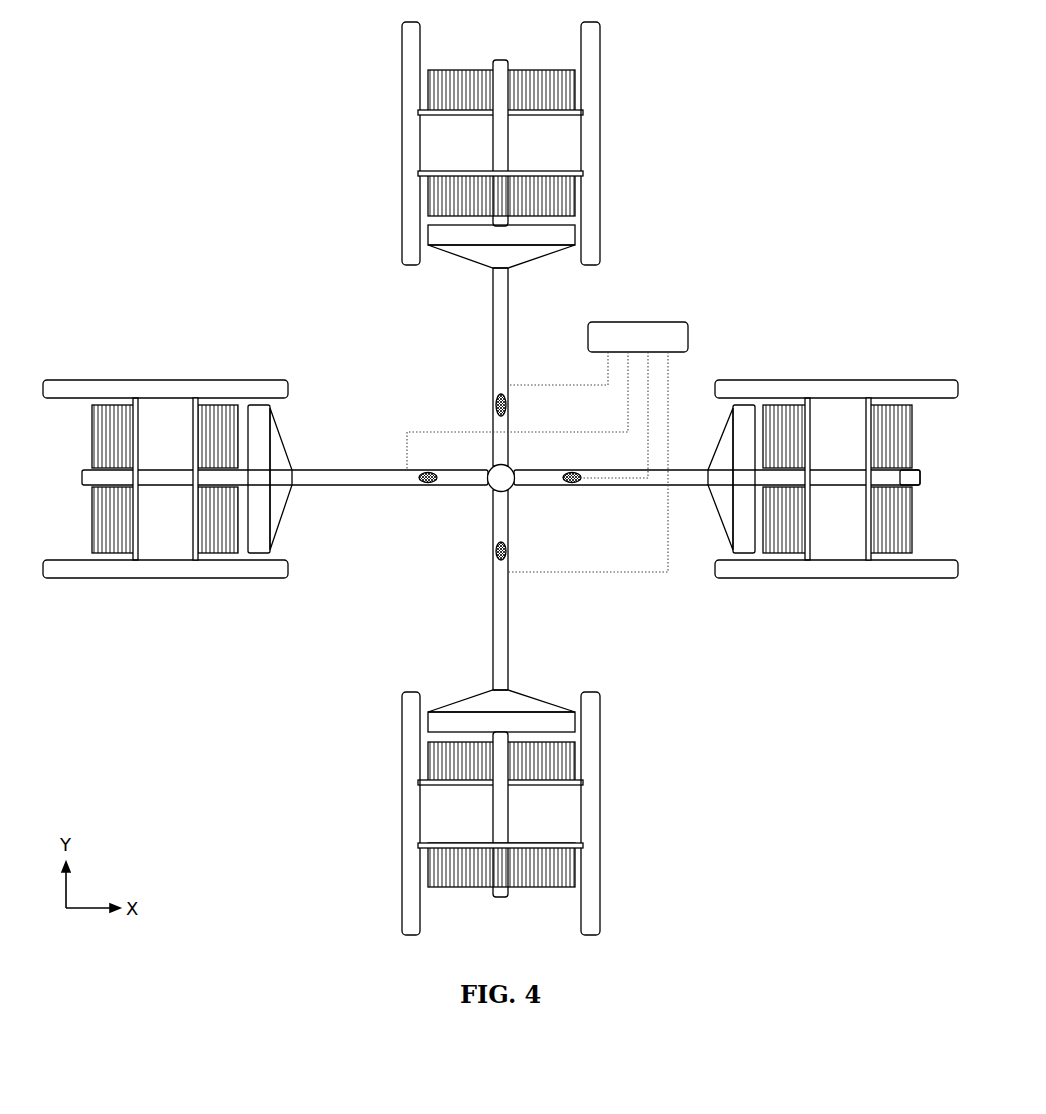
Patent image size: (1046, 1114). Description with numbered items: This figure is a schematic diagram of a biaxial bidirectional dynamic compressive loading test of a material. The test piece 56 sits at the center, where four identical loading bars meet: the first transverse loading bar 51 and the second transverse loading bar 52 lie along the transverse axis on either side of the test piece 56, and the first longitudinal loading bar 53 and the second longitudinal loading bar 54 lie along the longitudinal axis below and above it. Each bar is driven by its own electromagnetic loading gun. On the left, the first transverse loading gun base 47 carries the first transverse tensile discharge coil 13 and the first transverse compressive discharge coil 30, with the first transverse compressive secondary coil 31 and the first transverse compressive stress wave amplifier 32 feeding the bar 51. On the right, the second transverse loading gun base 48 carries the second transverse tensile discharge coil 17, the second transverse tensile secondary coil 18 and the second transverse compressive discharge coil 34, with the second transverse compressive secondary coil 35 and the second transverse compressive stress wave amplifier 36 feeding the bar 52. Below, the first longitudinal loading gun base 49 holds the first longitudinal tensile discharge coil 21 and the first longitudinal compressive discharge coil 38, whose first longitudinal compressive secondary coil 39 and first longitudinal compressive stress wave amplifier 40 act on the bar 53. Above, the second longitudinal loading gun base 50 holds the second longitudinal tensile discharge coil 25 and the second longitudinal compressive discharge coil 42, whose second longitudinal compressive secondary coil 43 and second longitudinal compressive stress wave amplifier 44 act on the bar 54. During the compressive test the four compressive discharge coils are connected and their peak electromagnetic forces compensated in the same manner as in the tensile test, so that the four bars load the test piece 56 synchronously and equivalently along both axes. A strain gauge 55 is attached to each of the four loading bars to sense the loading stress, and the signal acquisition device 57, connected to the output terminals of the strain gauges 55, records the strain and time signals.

The No. 1 transverse tensile discharge coil 13 is at (117, 553).
The No. 2 transverse tensile discharge coil 17 is at (883, 553).
The No. 2 transverse tensile secondary coil 18 is at (904, 540).
The No. 1 longitudinal tensile discharge coil 21 is at (577, 870).
The No. 2 longitudinal tensile discharge coil 25 is at (557, 93).
The No. 1 transverse compressive discharge coil 30 is at (230, 553).
The No. 1 transverse compressive secondary coil 31 is at (273, 553).
The No. 1 transverse compressive stress wave amplifier 32 is at (282, 502).
The No. 2 transverse compressive discharge coil 34 is at (765, 553).
The No. 2 transverse compressive secondary coil 35 is at (730, 553).
The No. 2 transverse compressive stress wave amplifier 36 is at (727, 505).
The No. 1 longitudinal compressive discharge coil 38 is at (565, 762).
The No. 1 longitudinal compressive secondary coil 39 is at (565, 727).
The No. 1 longitudinal compressive stress wave amplifier 40 is at (533, 710).
The No. 2 longitudinal compressive discharge coil 42 is at (550, 202).
The No. 2 longitudinal compressive secondary coil 43 is at (552, 231).
The No. 2 longitudinal compressive stress wave amplifier 44 is at (520, 248).
The No. 1 transverse loading gun base 47 is at (162, 548).
The No. 2 transverse loading gun base 48 is at (842, 548).
The No. 1 longitudinal loading gun base 49 is at (552, 817).
The No. 2 longitudinal loading gun base 50 is at (551, 141).
The No. 1 transverse loading bar 51 is at (357, 484).
The No. 2 transverse loading bar 52 is at (622, 487).
The No. 1 longitudinal loading bar 53 is at (493, 647).
The No. 2 longitudinal loading bar 54 is at (501, 336).
The strain gauge 55 is at (495, 560).
The test piece 56 is at (492, 483).
The signal acquisition device 57 is at (636, 337).